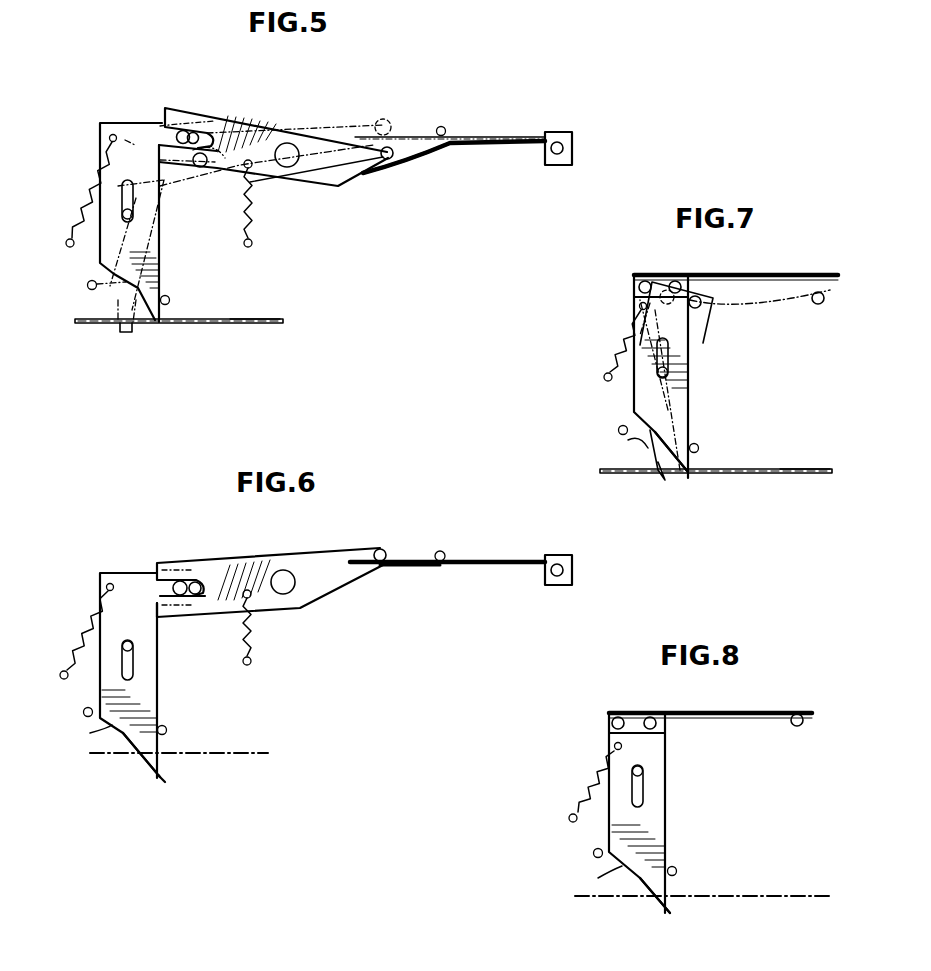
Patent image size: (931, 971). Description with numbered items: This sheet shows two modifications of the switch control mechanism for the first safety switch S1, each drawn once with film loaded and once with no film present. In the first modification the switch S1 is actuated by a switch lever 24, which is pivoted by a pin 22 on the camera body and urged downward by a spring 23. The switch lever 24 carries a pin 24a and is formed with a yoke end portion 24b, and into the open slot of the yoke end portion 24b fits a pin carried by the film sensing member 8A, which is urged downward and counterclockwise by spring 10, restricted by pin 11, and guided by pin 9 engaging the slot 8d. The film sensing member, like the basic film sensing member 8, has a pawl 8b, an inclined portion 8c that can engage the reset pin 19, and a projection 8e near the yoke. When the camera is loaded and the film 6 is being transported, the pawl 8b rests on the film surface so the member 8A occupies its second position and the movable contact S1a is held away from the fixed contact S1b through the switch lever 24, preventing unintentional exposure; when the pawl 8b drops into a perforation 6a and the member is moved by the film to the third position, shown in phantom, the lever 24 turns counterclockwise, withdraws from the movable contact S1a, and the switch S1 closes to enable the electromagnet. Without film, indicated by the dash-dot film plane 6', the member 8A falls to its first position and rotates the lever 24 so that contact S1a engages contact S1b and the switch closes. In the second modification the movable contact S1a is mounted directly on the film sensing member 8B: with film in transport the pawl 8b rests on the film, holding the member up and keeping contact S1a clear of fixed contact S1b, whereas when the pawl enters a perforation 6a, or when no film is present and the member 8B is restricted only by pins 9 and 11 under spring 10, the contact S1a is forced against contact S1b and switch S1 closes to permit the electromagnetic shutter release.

In FIG. 5, the film 6 is at (179, 348).
In FIG. 7, the film 6 is at (716, 495).
In FIG. 5, the perforation 6a is at (250, 325).
In FIG. 7, the perforation 6a is at (780, 474).
In FIG. 6, the base plate (alternative) 6' is at (179, 771).
In FIG. 8, the base plate (alternative) 6' is at (702, 921).
In FIG. 5, the film sensing member 8 is at (150, 324).
In FIG. 6, the film sensing member 8 is at (132, 677).
In FIG. 5, the film sensing member 8A is at (155, 257).
In FIG. 6, the film sensing member 8A is at (150, 700).
In FIG. 7, the film sensing member 8B is at (684, 388).
In FIG. 8, the film sensing member 8B is at (655, 828).
In FIG. 7, the pawl 8b is at (688, 478).
In FIG. 6, the pawl 8b is at (160, 778).
In FIG. 8, the pawl 8b is at (668, 912).
In FIG. 5, the inclined portion 8c is at (112, 272).
In FIG. 7, the inclined portion 8c is at (640, 452).
In FIG. 6, the inclined portion 8c is at (90, 733).
In FIG. 8, the inclined portion 8c is at (598, 878).
In FIG. 5, the slot 8d is at (110, 178).
In FIG. 7, the slot 8d is at (668, 345).
In FIG. 6, the slot 8d is at (133, 672).
In FIG. 8, the slot 8d is at (643, 798).
In FIG. 5, the lever pin 8e is at (178, 128).
In FIG. 6, the lever pin 8e is at (172, 588).
In FIG. 5, the pin 9 is at (133, 214).
In FIG. 7, the pin 9 is at (668, 372).
In FIG. 6, the pin 9 is at (133, 646).
In FIG. 8, the pin 9 is at (643, 771).
In FIG. 5, the spring 10 is at (88, 198).
In FIG. 7, the spring 10 is at (628, 340).
In FIG. 6, the spring 10 is at (82, 636).
In FIG. 8, the spring 10 is at (598, 770).
In FIG. 5, the pin 11 is at (170, 300).
In FIG. 7, the pin 11 is at (698, 448).
In FIG. 6, the pin 11 is at (167, 730).
In FIG. 8, the pin 11 is at (676, 871).
In FIG. 5, the reset pin 19 is at (90, 290).
In FIG. 7, the reset pin 19 is at (619, 430).
In FIG. 6, the reset pin 19 is at (84, 712).
In FIG. 8, the reset pin 19 is at (594, 853).
In FIG. 5, the pin 22 is at (292, 162).
In FIG. 6, the pin 22 is at (288, 592).
In FIG. 5, the spring 23 is at (252, 200).
In FIG. 6, the spring 23 is at (251, 640).
In FIG. 5, the switch lever 24 is at (322, 126).
In FIG. 6, the switch lever 24 is at (325, 590).
In FIG. 5, the pin 24a is at (392, 146).
In FIG. 6, the pin 24a is at (378, 550).
In FIG. 5, the yoke end portion 24b is at (220, 138).
In FIG. 6, the yoke end portion 24b is at (194, 581).
In FIG. 5, the first safety switch S1 is at (465, 136).
In FIG. 7, the first safety switch S1 is at (856, 290).
In FIG. 6, the first safety switch S1 is at (458, 563).
In FIG. 8, the first safety switch S1 is at (820, 724).
In FIG. 5, the movable contact S1a is at (416, 152).
In FIG. 7, the movable contact S1a is at (745, 277).
In FIG. 6, the movable contact S1a is at (403, 566).
In FIG. 8, the movable contact S1a is at (738, 714).
In FIG. 5, the fixed contact S1b is at (444, 126).
In FIG. 7, the fixed contact S1b is at (814, 304).
In FIG. 6, the fixed contact S1b is at (440, 550).
In FIG. 8, the fixed contact S1b is at (795, 726).